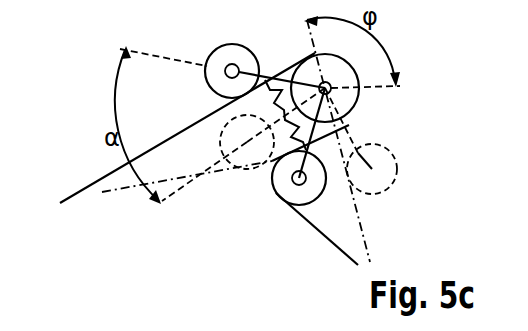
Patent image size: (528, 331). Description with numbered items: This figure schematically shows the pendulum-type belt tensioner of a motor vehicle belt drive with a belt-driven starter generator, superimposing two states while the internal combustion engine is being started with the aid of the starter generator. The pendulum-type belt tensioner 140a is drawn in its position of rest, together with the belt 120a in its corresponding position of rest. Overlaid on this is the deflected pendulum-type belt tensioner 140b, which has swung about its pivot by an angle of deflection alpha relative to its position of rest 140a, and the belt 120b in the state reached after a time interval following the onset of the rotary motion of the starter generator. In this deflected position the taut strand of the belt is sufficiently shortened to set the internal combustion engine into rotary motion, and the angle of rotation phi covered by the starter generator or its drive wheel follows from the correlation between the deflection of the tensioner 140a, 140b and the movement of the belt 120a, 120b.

The belt 120a is at (358, 217).
The belt 120b is at (83, 193).
The pendulum-type belt tensioner 140a is at (390, 168).
The pendulum-type belt tensioner 140b is at (291, 192).